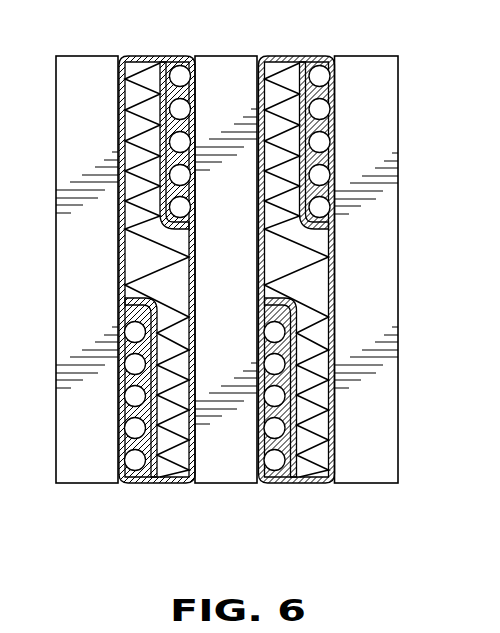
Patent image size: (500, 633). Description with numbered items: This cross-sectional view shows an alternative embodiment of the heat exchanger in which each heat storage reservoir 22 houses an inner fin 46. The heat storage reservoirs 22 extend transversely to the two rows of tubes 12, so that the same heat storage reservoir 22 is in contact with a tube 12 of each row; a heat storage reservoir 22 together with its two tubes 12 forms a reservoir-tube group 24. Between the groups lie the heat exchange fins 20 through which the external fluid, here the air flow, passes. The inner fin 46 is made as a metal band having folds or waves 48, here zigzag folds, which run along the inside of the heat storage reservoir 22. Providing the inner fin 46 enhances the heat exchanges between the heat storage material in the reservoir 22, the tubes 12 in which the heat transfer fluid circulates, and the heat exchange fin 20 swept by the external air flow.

The tube 12 is at (178, 54).
The heat exchange fin 20 is at (92, 488).
The heat storage reservoir 22 is at (121, 285).
The reservoir-tube group 24 is at (119, 488).
The inner fin 46 is at (148, 96).
The folds or waves 48 is at (300, 200).